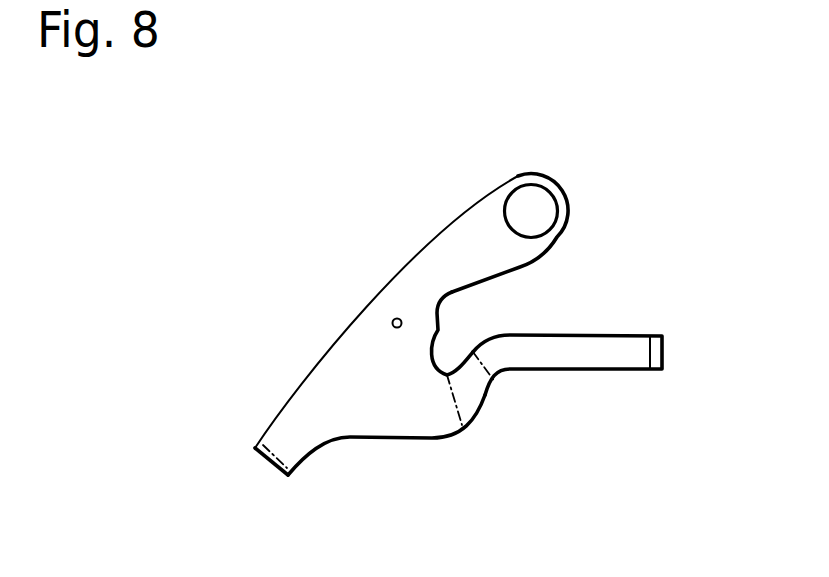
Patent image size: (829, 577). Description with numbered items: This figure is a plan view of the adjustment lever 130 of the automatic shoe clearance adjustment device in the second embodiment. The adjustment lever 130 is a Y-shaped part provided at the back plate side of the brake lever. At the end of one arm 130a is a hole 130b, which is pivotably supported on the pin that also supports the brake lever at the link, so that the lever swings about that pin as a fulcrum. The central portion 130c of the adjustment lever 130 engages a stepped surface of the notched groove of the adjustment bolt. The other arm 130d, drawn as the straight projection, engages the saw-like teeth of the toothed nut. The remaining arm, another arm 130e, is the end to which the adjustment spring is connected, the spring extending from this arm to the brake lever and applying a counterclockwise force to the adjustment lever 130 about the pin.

The adjustment lever 130 is at (386, 271).
The arm 130a is at (490, 200).
The hole 130b is at (548, 208).
The central portion 130c is at (431, 322).
The other arm 130d is at (663, 350).
The another arm 130e is at (280, 438).